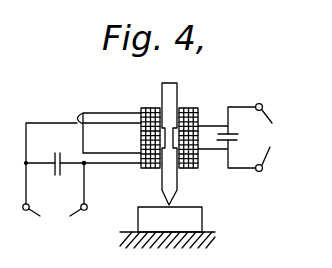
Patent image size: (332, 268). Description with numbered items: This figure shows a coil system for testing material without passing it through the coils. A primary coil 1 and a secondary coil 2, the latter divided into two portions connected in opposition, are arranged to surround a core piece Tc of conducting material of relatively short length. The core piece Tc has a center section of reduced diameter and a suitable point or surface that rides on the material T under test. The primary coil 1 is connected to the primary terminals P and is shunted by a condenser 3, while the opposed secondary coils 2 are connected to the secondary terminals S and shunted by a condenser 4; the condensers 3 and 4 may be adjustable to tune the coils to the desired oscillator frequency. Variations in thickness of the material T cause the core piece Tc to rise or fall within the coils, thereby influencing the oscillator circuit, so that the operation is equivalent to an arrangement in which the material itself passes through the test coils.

The primary coil 1 is at (141, 142).
The secondary coil 2 is at (156, 142).
The condenser 3 is at (238, 134).
The condenser 4 is at (57, 153).
The secondary terminals S is at (55, 218).
The primary terminals P is at (269, 138).
The core piece Tc is at (172, 183).
The material under test T is at (188, 220).